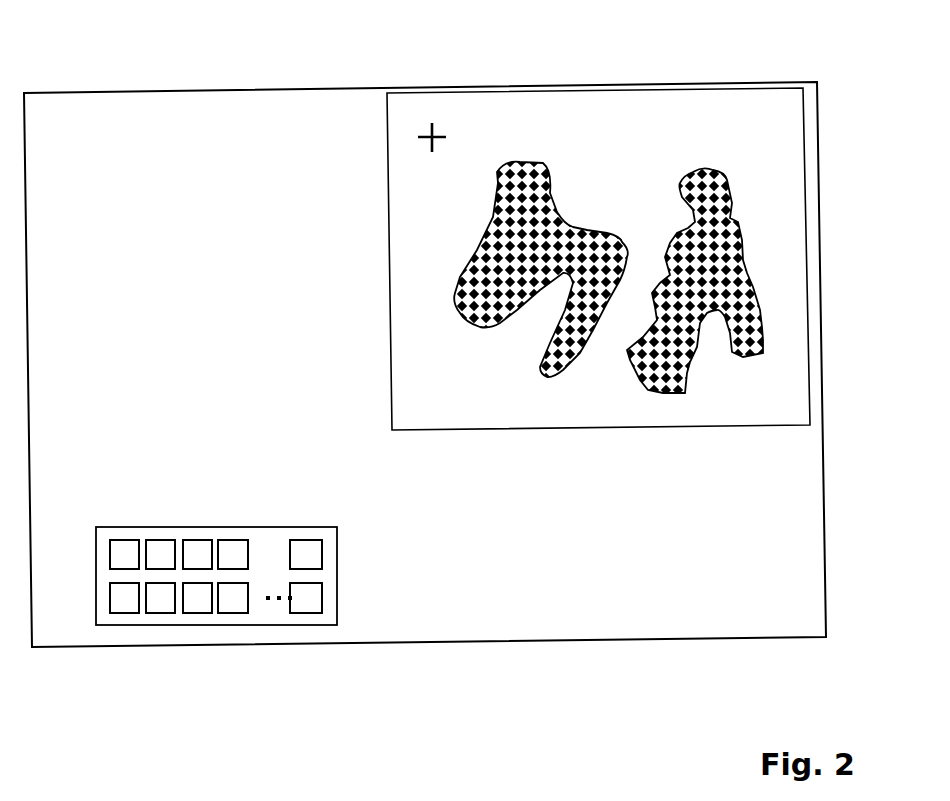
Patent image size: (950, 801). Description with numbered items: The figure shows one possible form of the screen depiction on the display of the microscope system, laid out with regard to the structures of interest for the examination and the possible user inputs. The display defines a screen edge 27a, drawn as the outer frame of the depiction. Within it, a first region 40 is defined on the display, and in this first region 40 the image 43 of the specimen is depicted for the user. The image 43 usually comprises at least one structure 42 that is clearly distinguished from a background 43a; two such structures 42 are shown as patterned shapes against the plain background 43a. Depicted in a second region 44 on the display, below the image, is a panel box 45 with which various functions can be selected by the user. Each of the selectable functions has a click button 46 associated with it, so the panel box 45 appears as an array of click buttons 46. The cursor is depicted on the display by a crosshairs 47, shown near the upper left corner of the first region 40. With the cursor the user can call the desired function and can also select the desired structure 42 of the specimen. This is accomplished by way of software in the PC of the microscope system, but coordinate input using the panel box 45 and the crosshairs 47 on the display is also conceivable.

The screen edge 27a is at (823, 372).
The first region 40 is at (810, 203).
The structure 42 is at (690, 210).
The image 43 is at (410, 222).
The background 43a is at (612, 181).
The second region 44 is at (216, 587).
The panel box 45 is at (279, 535).
The click button 46 is at (198, 548).
The crosshairs 47 is at (428, 128).